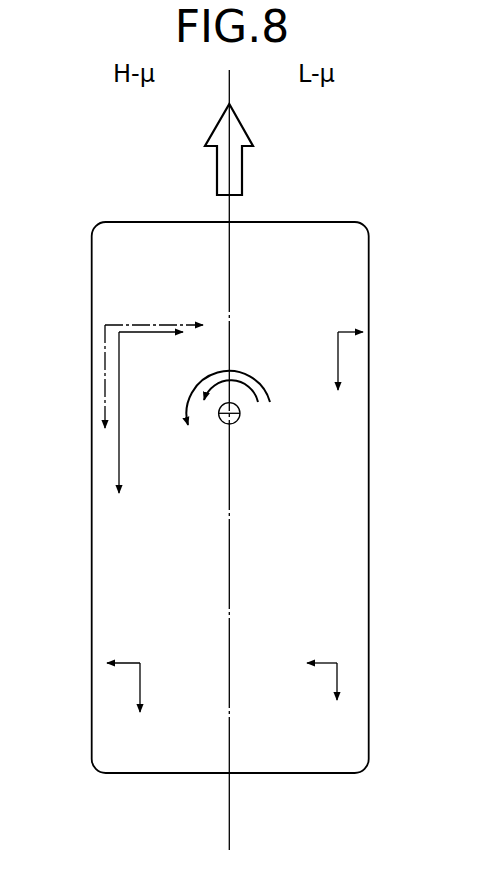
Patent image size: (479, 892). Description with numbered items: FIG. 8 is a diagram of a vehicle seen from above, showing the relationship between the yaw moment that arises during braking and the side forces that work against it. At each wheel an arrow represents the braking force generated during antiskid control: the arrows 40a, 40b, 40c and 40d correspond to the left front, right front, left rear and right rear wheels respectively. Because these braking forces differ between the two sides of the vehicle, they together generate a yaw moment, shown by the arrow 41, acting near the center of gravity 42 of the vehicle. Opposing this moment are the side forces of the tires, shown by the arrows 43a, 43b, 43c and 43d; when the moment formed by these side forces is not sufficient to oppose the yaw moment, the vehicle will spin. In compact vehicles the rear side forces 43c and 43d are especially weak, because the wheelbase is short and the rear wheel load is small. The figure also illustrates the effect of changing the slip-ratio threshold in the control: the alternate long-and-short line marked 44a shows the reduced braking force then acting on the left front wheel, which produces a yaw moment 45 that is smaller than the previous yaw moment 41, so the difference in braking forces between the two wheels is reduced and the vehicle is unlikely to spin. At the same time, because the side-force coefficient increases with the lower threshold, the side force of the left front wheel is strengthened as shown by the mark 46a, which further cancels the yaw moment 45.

The braking force arrow (left front wheel) 40a is at (120, 463).
The braking force arrow (right front wheel) 40b is at (340, 365).
The braking force arrow (left rear wheel) 40c is at (140, 690).
The braking force arrow (right rear wheel) 40d is at (333, 677).
The yaw moment 41 is at (248, 375).
The center of gravity 42 is at (237, 422).
The side force arrow (left front wheel) 43a is at (160, 335).
The side force arrow (right front wheel) 43b is at (347, 347).
The side force arrow (left rear wheel) 43c is at (133, 667).
The side force arrow (right rear wheel) 43d is at (325, 665).
The reduced braking force mark (left front wheel) 44a is at (103, 400).
The reduced yaw moment 45 is at (240, 388).
The strengthened side force mark (left front wheel) 46a is at (140, 322).